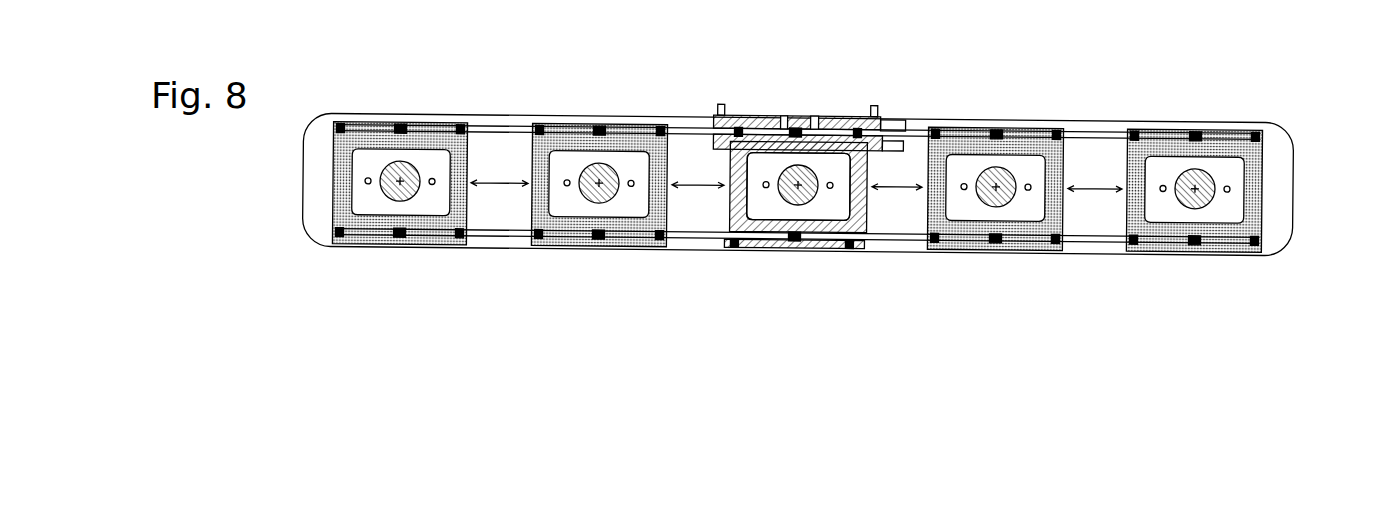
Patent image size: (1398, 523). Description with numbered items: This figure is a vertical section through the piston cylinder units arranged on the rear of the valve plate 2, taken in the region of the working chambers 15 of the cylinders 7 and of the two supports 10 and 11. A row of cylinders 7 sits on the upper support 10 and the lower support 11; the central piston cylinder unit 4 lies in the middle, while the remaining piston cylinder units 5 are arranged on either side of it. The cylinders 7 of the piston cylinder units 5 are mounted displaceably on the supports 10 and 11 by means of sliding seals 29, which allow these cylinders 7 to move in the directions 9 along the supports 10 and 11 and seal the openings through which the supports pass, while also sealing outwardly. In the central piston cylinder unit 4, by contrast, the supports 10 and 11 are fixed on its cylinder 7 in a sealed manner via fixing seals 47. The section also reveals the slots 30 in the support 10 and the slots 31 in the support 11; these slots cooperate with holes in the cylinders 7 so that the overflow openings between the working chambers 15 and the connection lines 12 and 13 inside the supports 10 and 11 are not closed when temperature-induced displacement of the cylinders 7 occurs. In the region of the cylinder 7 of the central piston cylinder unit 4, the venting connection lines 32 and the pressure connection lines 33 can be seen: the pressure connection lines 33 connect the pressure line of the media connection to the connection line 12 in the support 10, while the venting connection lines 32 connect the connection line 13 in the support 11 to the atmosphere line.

The valve plate 2 is at (908, 124).
The central piston cylinder unit 4 is at (797, 233).
The piston cylinder unit 5 is at (423, 247).
The cylinder 7 is at (822, 249).
The direction 9 is at (490, 188).
The support 10 is at (494, 127).
The support 11 is at (510, 240).
The connection line 12 is at (510, 133).
The connection line 13 is at (630, 251).
The working chamber 15 is at (365, 185).
The sliding seal 29 is at (341, 123).
The slot 30 is at (399, 126).
The slot 31 is at (398, 242).
The venting connection line 32 is at (745, 116).
The pressure connection line 33 is at (783, 116).
The fixing seal 47 is at (721, 105).